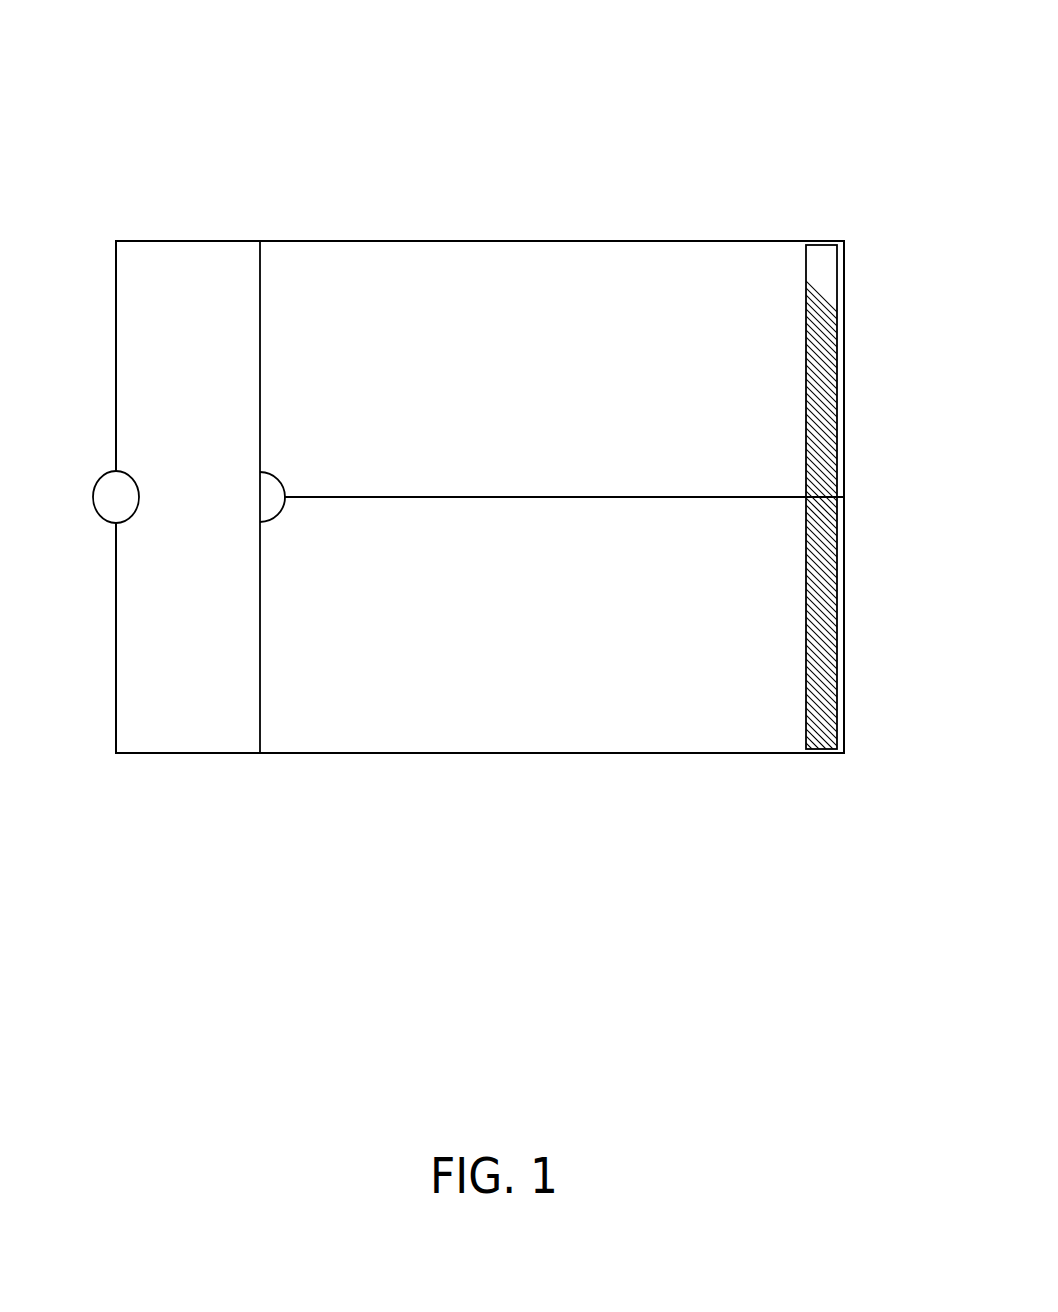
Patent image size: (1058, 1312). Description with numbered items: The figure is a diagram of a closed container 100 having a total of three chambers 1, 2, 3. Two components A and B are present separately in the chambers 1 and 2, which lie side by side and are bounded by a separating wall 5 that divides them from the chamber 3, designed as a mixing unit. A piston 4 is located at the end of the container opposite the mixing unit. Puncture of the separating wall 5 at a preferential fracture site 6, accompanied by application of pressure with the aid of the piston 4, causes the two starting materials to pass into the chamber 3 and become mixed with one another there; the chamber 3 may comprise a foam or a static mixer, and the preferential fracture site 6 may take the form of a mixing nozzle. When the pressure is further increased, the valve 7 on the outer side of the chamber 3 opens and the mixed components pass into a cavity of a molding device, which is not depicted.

The container 100 is at (709, 122).
The chamber 1 is at (508, 380).
The chamber 2 is at (508, 630).
The chamber designed as mixing unit 3 is at (186, 509).
The piston 4 is at (823, 320).
The separating wall 5 is at (261, 321).
The preferential fracture site 6 is at (278, 515).
The valve 7 is at (95, 484).